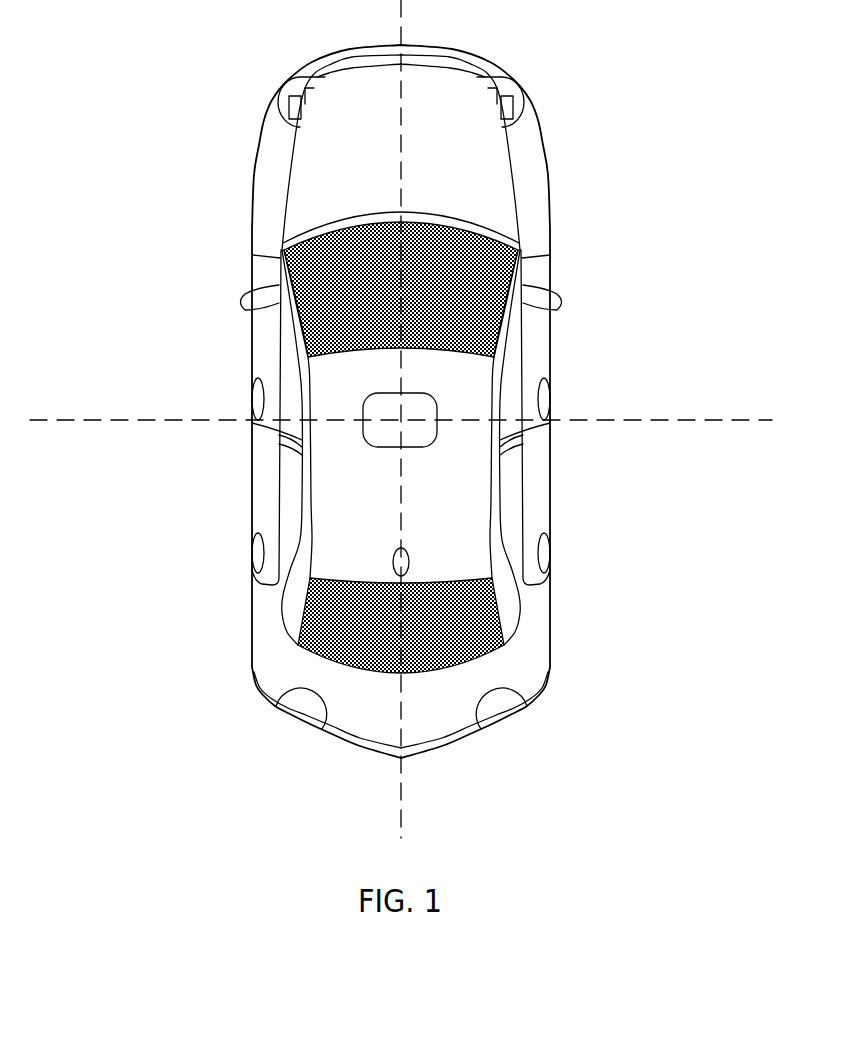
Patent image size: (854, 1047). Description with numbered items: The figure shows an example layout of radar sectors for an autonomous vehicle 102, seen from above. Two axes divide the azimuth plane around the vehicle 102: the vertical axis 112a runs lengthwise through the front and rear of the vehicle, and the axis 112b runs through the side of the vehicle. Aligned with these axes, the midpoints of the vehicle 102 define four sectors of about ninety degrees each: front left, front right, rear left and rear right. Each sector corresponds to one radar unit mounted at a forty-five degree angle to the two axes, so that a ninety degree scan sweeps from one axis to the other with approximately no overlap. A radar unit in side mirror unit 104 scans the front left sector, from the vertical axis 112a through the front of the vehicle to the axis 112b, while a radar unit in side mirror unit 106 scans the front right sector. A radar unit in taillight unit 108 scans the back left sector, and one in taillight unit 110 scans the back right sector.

The autonomous vehicle 102 is at (350, 45).
The side mirror unit 104 is at (248, 292).
The side mirror unit 106 is at (553, 291).
The taillight unit 108 is at (298, 710).
The taillight unit 110 is at (513, 707).
The vertical axis 112a is at (400, 803).
The axis 112b is at (153, 421).